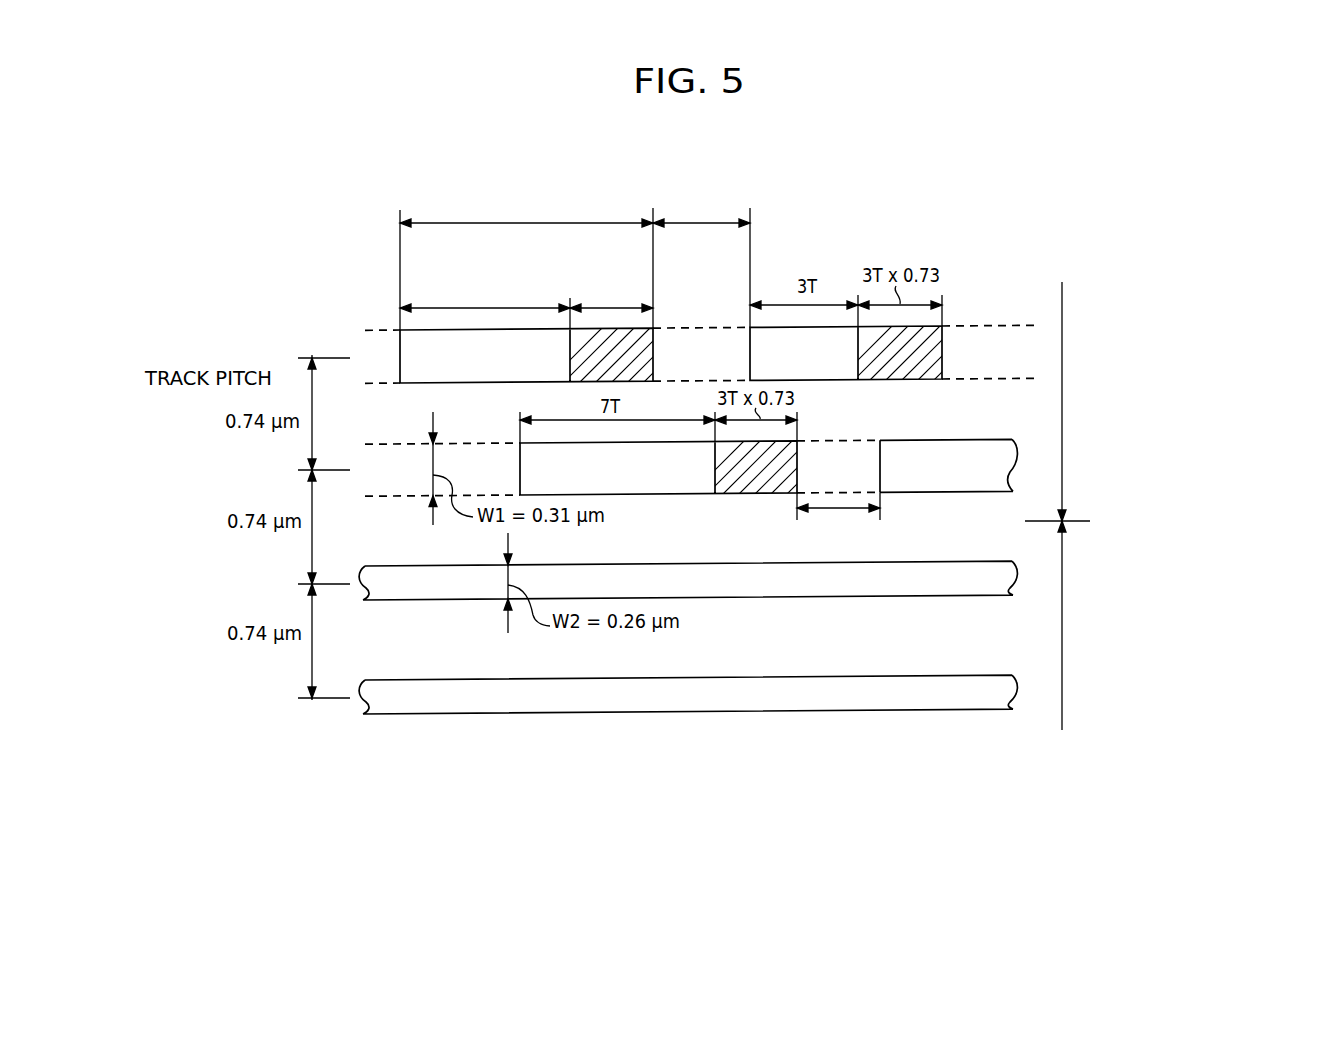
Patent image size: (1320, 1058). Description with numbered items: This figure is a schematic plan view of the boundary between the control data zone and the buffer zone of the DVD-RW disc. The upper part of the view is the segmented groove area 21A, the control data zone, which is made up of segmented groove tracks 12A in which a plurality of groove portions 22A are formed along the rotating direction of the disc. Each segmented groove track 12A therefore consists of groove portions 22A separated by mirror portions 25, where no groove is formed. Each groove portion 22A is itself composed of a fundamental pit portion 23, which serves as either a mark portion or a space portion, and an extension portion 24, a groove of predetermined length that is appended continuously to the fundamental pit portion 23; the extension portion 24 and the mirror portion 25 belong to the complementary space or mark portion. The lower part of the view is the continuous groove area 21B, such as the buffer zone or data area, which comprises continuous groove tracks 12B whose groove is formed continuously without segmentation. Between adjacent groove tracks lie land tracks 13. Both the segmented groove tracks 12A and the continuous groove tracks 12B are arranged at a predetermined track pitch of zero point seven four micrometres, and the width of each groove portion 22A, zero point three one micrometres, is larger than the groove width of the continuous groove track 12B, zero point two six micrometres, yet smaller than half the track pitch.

The segmented groove track 12A is at (370, 467).
The continuous groove track 12B is at (387, 578).
The land track 13 is at (975, 402).
The segmented groove area 21A is at (1160, 401).
The continuous groove area 21B is at (1143, 625).
The groove portion 22A is at (488, 222).
The fundamental pit portion 23 is at (489, 306).
The extension portion 24 is at (612, 304).
The mirror portion 25 is at (712, 220).